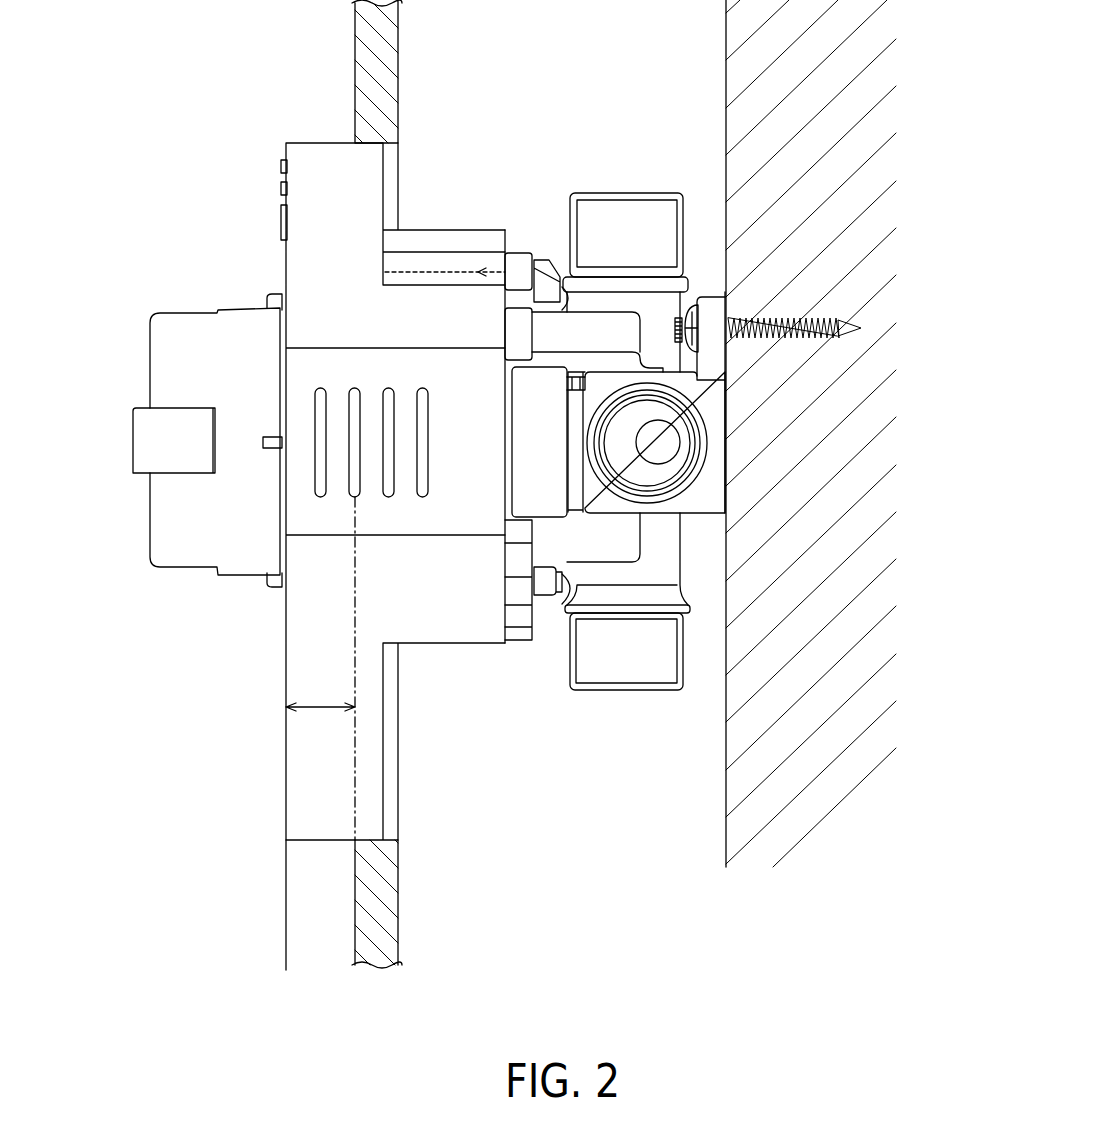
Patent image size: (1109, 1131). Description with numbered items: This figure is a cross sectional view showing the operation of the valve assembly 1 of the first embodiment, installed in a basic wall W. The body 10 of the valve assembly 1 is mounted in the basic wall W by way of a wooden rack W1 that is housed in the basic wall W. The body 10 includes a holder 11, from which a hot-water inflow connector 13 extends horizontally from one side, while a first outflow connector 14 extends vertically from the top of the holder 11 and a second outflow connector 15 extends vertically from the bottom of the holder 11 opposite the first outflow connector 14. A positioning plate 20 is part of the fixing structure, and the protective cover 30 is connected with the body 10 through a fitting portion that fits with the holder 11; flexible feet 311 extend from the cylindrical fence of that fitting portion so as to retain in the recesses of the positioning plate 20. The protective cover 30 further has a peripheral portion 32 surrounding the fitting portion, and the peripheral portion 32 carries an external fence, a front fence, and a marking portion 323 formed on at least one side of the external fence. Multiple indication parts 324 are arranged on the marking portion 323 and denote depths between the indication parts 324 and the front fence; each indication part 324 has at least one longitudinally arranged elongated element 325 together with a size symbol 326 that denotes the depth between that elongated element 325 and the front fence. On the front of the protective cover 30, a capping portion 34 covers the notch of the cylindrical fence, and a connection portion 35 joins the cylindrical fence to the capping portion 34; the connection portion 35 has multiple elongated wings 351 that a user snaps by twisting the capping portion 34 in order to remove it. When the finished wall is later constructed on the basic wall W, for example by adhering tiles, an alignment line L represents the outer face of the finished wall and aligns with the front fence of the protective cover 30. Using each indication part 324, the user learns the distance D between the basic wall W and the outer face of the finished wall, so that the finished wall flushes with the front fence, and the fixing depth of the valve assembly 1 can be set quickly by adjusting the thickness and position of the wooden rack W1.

The valve assembly 1 is at (172, 173).
The body 10 is at (625, 193).
The holder 11 is at (592, 547).
The hot-water inflow connector 13 is at (697, 477).
The first outflow connector 14 is at (657, 210).
The second outflow connector 15 is at (610, 670).
The positioning plate 20 is at (520, 247).
The protective cover 30 is at (318, 144).
The flexible feet 311 is at (550, 270).
The peripheral portion 32 is at (285, 200).
The marking portion 323 is at (472, 520).
The indication parts 324 is at (257, 248).
The elongated element 325 is at (315, 400).
The size symbol 326 is at (330, 363).
The capping portion 34 is at (150, 373).
The connection portion 35 is at (207, 564).
The elongated wings 351 is at (273, 448).
The basic wall W is at (355, 43).
The wooden rack W1 is at (738, 790).
The alignment line L is at (285, 918).
The distance D is at (320, 690).